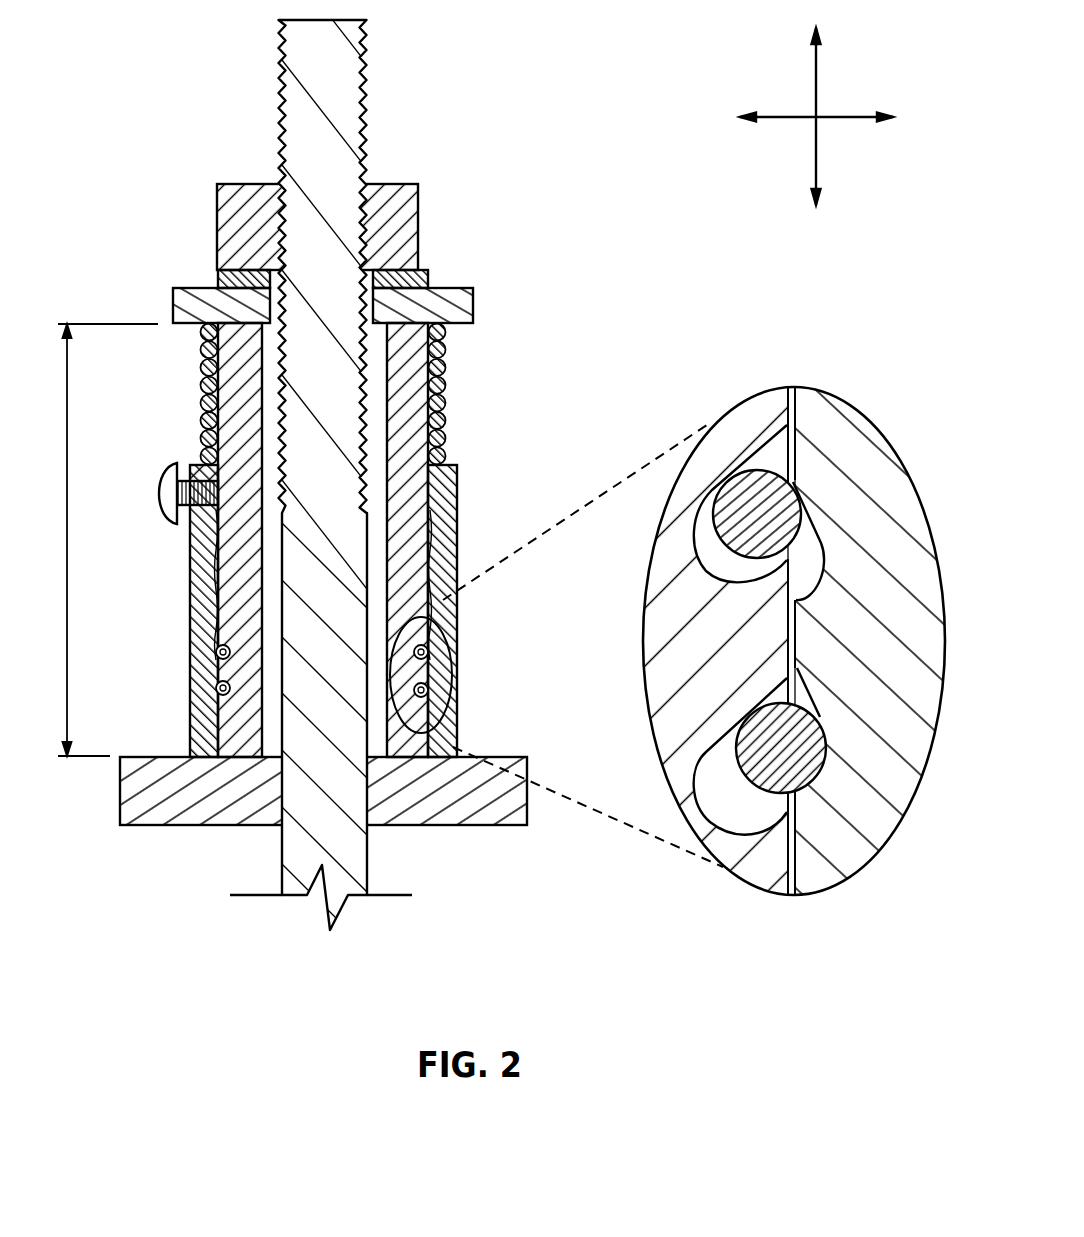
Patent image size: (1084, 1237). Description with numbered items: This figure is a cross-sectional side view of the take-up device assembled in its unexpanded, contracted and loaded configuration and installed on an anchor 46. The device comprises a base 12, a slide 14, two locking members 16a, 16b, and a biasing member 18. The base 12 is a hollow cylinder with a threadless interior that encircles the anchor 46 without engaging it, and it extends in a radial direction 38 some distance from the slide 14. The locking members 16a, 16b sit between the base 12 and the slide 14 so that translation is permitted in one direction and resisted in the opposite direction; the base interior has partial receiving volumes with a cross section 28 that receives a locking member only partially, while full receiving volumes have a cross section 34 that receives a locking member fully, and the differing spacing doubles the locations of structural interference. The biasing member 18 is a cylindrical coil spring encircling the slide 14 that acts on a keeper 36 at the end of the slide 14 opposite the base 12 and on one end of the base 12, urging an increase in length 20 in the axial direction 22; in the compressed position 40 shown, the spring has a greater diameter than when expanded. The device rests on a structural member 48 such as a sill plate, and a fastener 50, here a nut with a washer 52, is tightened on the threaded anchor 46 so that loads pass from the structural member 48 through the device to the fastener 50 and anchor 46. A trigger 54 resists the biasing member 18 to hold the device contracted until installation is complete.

The base 12 is at (450, 514).
The slide 14 is at (413, 370).
The first locking member 16a is at (757, 500).
The second locking member 16b is at (790, 772).
The biasing member 18 is at (200, 380).
The length 20 is at (67, 558).
The axial direction 22 is at (818, 75).
The cross section of partial receiving volume 28 is at (826, 700).
The cross section of full receiving volume 34 is at (714, 584).
The keeper 36 is at (472, 306).
The radial direction 38 is at (840, 120).
The compressed position 40 is at (535, 402).
The anchor 46 is at (360, 98).
The structural member 48 is at (508, 823).
The fastener 50 is at (413, 203).
The washer 52 is at (428, 277).
The trigger 54 is at (160, 497).